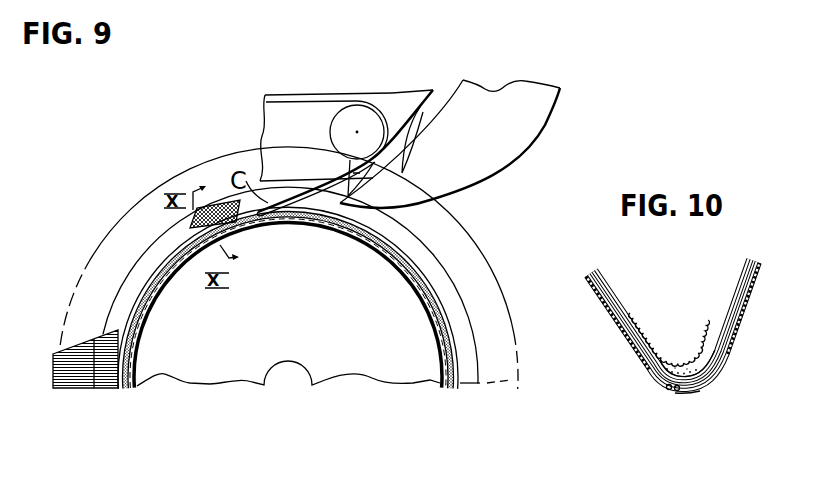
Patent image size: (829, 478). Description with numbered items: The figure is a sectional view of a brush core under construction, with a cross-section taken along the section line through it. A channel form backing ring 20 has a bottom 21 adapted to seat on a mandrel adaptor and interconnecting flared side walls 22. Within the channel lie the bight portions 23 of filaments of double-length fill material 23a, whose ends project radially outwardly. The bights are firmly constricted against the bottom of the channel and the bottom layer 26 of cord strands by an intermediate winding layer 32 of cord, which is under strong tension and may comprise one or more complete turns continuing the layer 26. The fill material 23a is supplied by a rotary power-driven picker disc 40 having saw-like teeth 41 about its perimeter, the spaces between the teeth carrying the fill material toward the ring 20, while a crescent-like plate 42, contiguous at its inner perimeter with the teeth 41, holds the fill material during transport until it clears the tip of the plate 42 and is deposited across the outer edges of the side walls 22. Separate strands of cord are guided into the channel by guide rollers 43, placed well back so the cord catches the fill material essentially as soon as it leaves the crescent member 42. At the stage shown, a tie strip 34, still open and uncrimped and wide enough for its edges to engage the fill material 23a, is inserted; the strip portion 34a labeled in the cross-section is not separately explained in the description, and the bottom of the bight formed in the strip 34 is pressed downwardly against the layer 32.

In FIG. 9, the channel form backing ring 20 is at (127, 272).
In FIG. 10, the channel form backing ring 20 is at (641, 378).
In FIG. 9, the bottom 21 is at (363, 254).
In FIG. 10, the bottom 21 is at (668, 391).
In FIG. 9, the side walls 22 is at (115, 305).
In FIG. 10, the side walls 22 is at (752, 298).
In FIG. 9, the bight portions 23 is at (452, 385).
In FIG. 10, the bight portions 23 is at (690, 383).
In FIG. 9, the fill material 23a is at (73, 387).
In FIG. 10, the fill material 23a is at (598, 289).
In FIG. 10, the bottom layer of cord 26 is at (682, 398).
In FIG. 9, the intermediate winding layer 32 is at (440, 291).
In FIG. 10, the intermediate winding layer 32 is at (686, 367).
In FIG. 9, the tie strip 34 is at (190, 232).
In FIG. 10, the tie strip 34 is at (661, 364).
In FIG. 10, the tread rubber 34a is at (636, 312).
In FIG. 9, the picker disc 40 is at (409, 101).
In FIG. 9, the saw-like teeth 41 is at (403, 163).
In FIG. 9, the crescent-like plate 42 is at (484, 177).
In FIG. 9, the guide rollers 43 is at (331, 132).